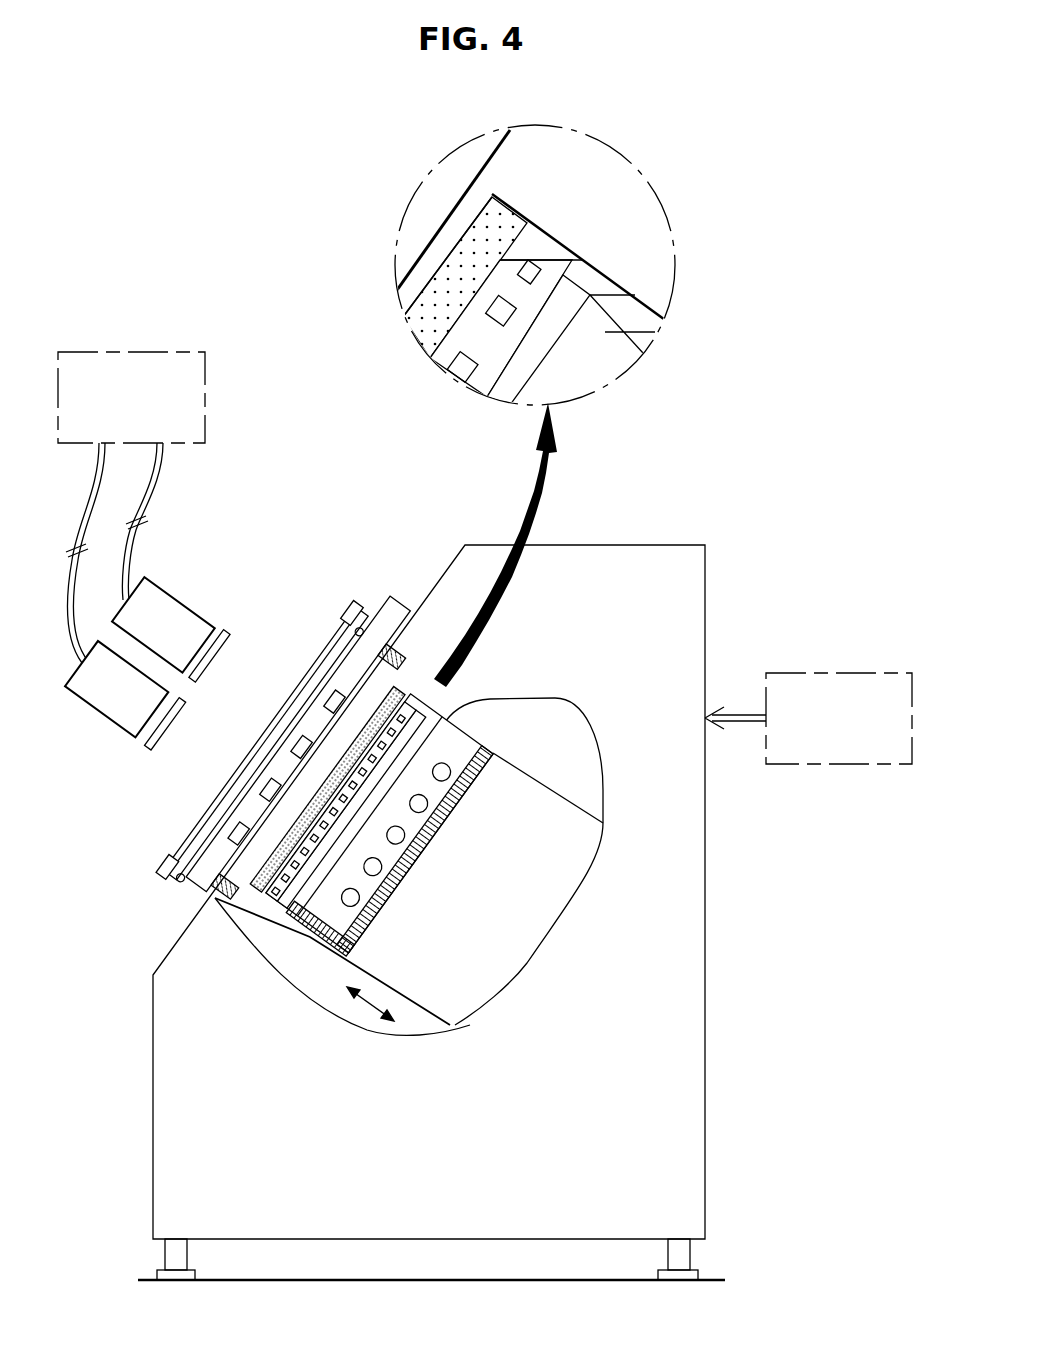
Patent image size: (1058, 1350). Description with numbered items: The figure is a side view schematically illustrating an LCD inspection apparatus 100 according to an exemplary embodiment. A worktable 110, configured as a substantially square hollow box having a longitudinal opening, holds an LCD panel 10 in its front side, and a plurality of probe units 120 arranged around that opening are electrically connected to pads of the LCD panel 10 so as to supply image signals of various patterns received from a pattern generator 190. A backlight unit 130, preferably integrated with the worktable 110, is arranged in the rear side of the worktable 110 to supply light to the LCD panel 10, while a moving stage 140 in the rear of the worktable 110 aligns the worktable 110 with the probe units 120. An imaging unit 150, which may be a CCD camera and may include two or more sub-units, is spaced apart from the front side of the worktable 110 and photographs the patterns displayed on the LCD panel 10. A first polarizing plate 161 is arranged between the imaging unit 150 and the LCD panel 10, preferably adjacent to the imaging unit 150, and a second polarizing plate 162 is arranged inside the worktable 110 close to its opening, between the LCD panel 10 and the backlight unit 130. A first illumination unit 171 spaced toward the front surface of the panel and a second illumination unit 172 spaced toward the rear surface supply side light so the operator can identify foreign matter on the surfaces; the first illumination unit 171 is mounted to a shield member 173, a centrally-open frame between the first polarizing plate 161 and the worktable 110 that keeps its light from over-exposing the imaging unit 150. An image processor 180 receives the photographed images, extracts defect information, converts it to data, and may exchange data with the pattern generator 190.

The LCD panel 10 is at (370, 715).
The apparatus body frame 100 is at (612, 538).
The worktable 110 is at (432, 699).
The probe units 120 is at (404, 606).
The backlight unit 130 is at (315, 935).
The moving stage 140 is at (518, 940).
The imaging unit 150 is at (158, 637).
The first polarizing plate 161 is at (170, 722).
The second polarizing plate 162 is at (333, 918).
The first illumination unit 171 is at (350, 625).
The second illumination unit 172 is at (330, 822).
The shield member 173 is at (310, 641).
The image processor 180 is at (163, 352).
The pattern generator 190 is at (870, 673).